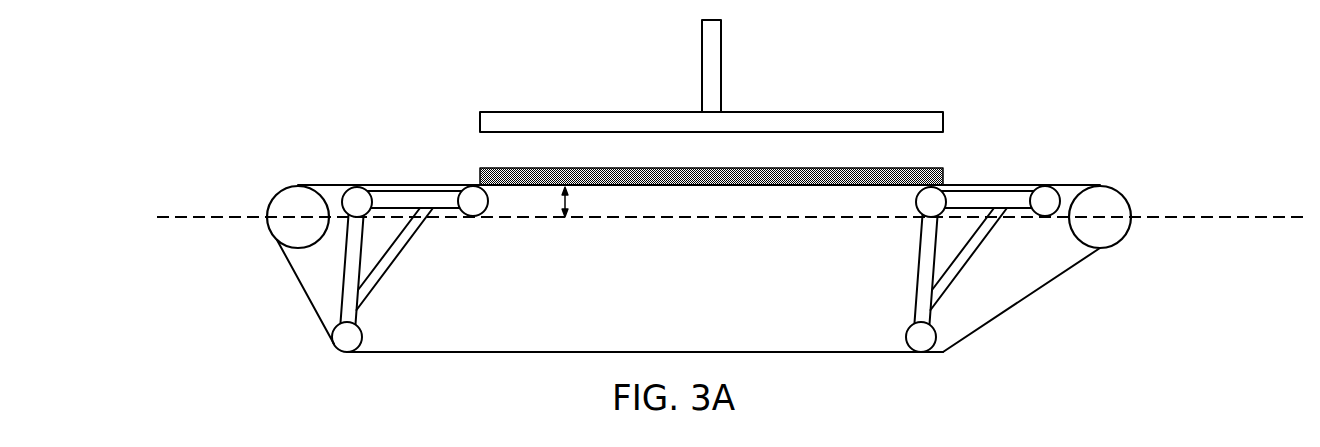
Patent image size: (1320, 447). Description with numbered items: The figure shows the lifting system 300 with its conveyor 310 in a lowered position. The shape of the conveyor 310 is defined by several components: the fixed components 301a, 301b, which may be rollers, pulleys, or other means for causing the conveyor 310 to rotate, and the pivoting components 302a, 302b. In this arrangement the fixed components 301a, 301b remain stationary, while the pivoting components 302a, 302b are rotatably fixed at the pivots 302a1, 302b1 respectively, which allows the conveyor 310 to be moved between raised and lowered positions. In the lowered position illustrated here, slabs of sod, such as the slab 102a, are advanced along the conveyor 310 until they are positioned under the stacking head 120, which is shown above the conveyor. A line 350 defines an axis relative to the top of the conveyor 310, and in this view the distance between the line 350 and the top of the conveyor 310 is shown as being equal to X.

The lifting system 300 is at (710, 185).
The stacking head 120 is at (701, 55).
The slab 102a is at (944, 174).
The fixed component 301a is at (269, 196).
The fixed component 301b is at (1130, 200).
The pivoting component 302a is at (398, 260).
The pivot 302a1 is at (357, 202).
The pivoting component 302b is at (915, 265).
The pivot 302b1 is at (930, 202).
The conveyor 310 is at (1040, 297).
The line 350 is at (193, 218).